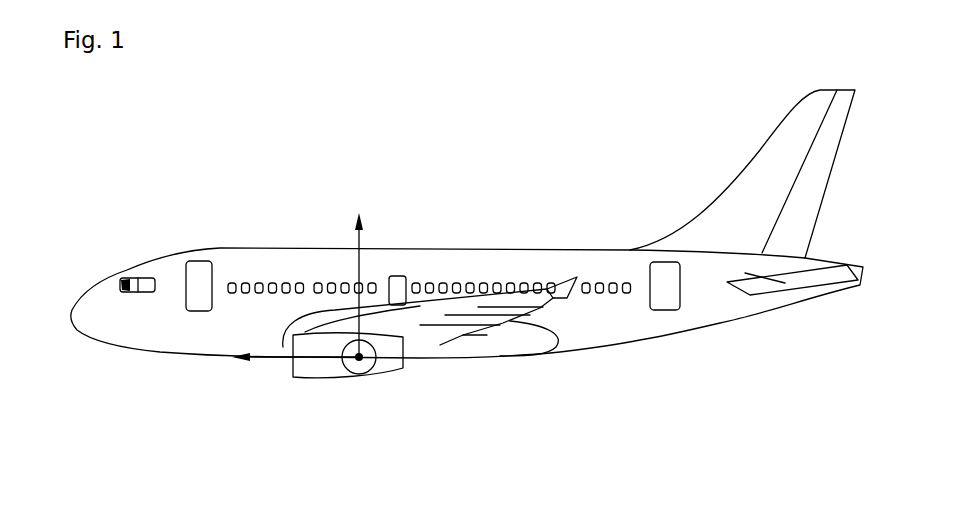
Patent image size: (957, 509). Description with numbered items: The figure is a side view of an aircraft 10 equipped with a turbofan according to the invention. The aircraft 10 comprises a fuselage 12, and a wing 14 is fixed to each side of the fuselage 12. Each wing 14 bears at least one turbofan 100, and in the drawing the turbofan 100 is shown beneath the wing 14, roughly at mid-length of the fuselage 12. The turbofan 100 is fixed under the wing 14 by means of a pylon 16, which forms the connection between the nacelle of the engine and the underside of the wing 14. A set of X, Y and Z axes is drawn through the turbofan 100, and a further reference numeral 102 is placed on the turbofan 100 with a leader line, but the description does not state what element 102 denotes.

The aircraft 10 is at (612, 172).
The fuselage 12 is at (632, 326).
The wing 14 is at (464, 307).
The pylon 16 is at (413, 332).
The turbofan 100 is at (258, 410).
The reference point 102 is at (333, 357).